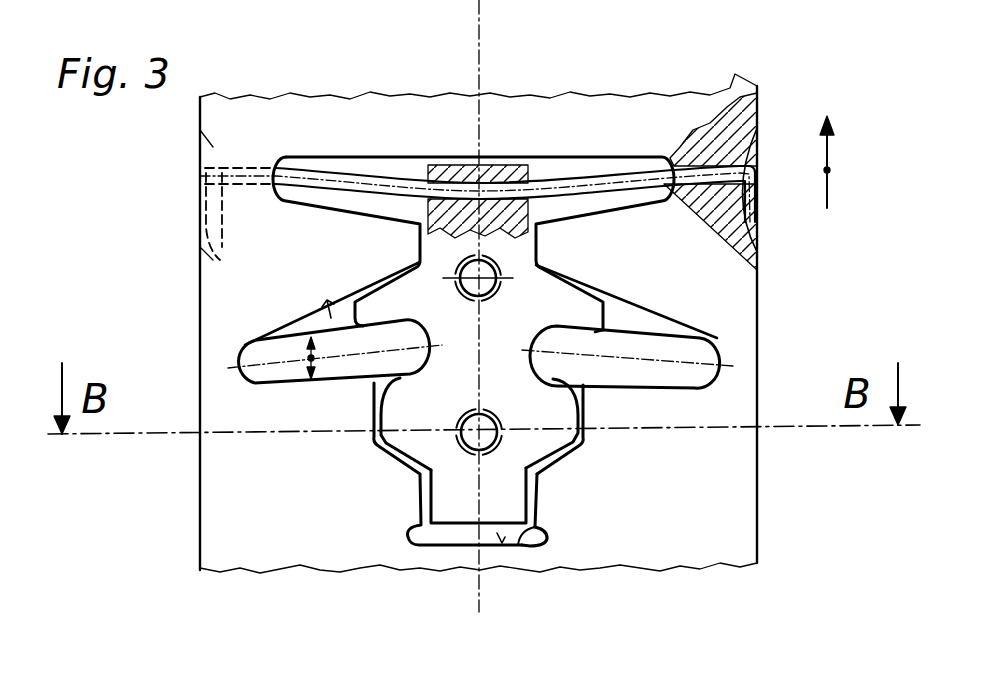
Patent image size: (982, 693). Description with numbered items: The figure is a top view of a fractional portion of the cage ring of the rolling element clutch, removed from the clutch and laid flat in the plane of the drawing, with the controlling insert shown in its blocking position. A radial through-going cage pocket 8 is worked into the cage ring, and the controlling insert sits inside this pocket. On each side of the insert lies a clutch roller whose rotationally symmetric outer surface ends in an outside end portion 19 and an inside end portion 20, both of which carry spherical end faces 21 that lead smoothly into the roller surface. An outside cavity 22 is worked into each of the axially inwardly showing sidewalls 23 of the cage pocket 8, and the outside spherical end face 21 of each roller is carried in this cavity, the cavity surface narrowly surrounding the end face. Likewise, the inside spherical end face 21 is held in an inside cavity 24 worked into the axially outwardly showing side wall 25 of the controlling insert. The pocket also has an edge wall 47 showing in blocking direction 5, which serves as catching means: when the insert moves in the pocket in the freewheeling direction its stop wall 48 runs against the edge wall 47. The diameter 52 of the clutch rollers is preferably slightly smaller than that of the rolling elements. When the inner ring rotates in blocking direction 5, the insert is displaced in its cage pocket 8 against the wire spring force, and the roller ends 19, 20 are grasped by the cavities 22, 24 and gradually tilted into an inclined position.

The blocking direction 5 is at (827, 170).
The cage pocket 8 is at (545, 157).
The outside end portion 19 is at (693, 345).
The inside end portion 20 is at (392, 358).
The spherical end faces 21 is at (707, 345).
The outside cavity 22 is at (265, 377).
The sidewalls 23 is at (381, 282).
The inside cavity 24 is at (553, 336).
The side wall 25 is at (550, 430).
The edge wall 47 is at (542, 540).
The stop wall 48 is at (455, 524).
The diameter 52 is at (310, 362).